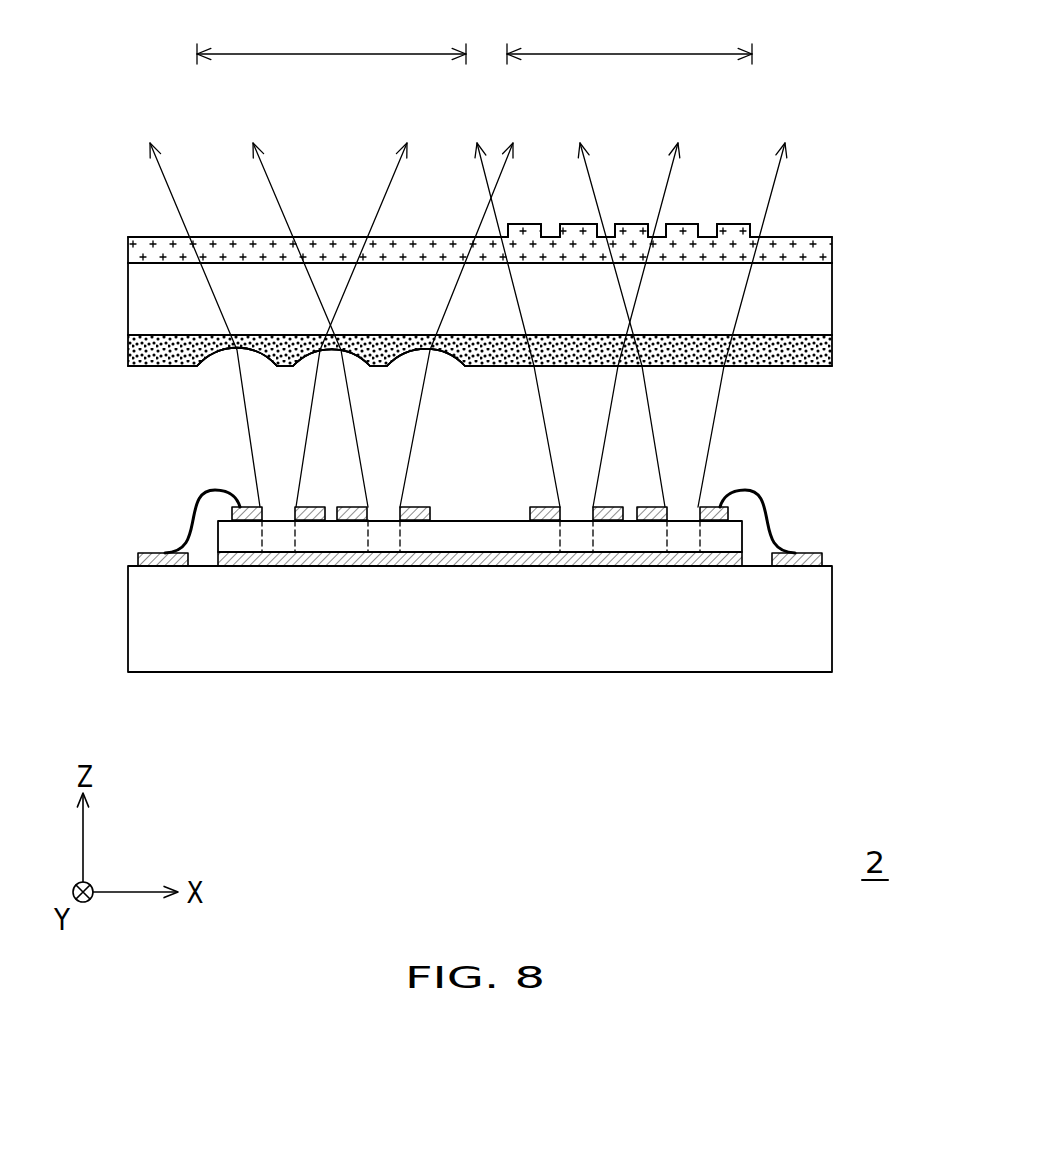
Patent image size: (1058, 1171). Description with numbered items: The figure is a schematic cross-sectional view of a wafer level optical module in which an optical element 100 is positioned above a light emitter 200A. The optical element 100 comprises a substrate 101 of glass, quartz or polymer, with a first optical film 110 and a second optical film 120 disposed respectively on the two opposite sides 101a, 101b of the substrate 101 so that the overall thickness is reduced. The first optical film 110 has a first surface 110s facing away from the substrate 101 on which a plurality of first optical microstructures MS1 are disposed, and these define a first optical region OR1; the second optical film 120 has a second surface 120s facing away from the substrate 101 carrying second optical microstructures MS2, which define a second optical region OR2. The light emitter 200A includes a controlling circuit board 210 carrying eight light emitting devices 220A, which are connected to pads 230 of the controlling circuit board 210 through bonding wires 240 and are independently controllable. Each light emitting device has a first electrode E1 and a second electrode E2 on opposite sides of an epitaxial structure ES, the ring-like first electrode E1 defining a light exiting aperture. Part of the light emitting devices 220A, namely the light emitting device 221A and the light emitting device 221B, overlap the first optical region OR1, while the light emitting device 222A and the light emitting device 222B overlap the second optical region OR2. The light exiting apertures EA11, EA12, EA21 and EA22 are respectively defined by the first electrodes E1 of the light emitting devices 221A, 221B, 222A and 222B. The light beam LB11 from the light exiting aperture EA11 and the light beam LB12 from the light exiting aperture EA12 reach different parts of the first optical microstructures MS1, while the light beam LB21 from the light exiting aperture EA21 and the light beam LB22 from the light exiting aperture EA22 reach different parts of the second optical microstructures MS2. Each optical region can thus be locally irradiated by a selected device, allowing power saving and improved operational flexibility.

The optical element 100 is at (504, 293).
The first optical film 110 is at (518, 214).
The first surface 110s is at (802, 235).
The first optical microstructures MS1 is at (737, 230).
The substrate 101 is at (471, 296).
The side of the substrate 101a is at (163, 260).
The side of the substrate 101b is at (163, 338).
The second optical film 120 is at (519, 379).
The second surface 120s is at (802, 370).
The second optical microstructures MS2 is at (221, 352).
The first optical region OR1 is at (629, 41).
The second optical region OR2 is at (331, 41).
The light beam LB11 is at (607, 442).
The light beam LB12 is at (712, 442).
The light beam LB21 is at (307, 442).
The light beam LB22 is at (413, 442).
The light exiting aperture EA11 is at (541, 481).
The light exiting aperture EA12 is at (684, 510).
The light exiting aperture EA21 is at (276, 505).
The light exiting aperture EA22 is at (386, 505).
The first electrode E1 is at (530, 517).
The second electrode E2 is at (508, 560).
The epitaxial structure ES is at (455, 540).
The light emitter 200A is at (469, 608).
The controlling circuit board 210 is at (815, 630).
The light emitting devices 220A is at (482, 608).
The light emitting device 221A is at (553, 588).
The light emitting device 221B is at (722, 588).
The light emitting device 222A is at (247, 588).
The light emitting device 222B is at (418, 588).
The pads 230 is at (822, 559).
The bonding wires 240 is at (782, 537).